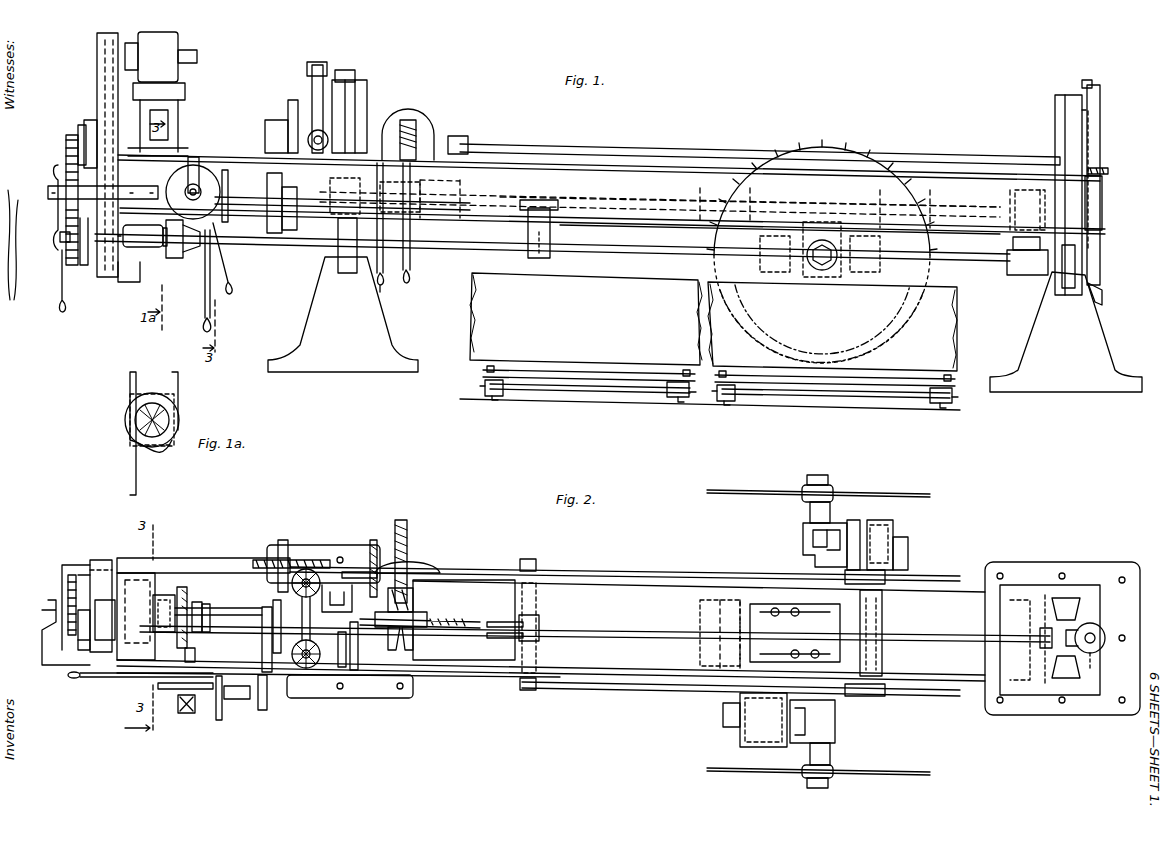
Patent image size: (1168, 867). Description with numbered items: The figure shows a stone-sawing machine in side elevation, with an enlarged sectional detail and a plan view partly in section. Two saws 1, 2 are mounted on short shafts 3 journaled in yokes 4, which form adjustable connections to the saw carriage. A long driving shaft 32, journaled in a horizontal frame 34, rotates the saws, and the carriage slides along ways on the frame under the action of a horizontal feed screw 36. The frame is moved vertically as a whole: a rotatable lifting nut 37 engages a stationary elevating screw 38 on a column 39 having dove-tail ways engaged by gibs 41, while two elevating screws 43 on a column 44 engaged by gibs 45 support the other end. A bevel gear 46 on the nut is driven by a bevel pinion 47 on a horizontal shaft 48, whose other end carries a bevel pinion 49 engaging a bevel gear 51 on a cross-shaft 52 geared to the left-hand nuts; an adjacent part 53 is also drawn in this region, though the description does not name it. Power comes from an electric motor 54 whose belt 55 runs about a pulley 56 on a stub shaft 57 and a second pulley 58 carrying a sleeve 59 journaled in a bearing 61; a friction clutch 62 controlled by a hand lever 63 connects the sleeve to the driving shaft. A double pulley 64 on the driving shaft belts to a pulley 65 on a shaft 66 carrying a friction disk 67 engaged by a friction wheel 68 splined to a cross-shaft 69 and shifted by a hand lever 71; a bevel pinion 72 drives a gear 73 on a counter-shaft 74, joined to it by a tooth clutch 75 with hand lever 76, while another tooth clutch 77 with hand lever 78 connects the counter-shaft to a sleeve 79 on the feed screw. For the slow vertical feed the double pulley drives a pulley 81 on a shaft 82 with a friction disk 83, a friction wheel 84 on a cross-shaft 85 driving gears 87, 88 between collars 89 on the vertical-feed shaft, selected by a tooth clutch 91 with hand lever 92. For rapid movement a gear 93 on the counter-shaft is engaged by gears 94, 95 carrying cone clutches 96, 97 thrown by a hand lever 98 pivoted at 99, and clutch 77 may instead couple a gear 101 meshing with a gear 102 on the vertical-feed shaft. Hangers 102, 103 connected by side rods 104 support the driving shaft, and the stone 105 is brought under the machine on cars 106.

In FIG. 1, the saw 1 is at (852, 178).
In FIG. 2, the saw 1 is at (880, 768).
In FIG. 2, the saw 2 is at (900, 492).
In FIG. 2, the short shaft 3 is at (813, 538).
In FIG. 2, the yoke 4 is at (810, 510).
In FIG. 1, the driving shaft 32 is at (60, 240).
In FIG. 1A, the driving shaft 32 is at (134, 446).
In FIG. 2, the driving shaft 32 is at (590, 626).
In FIG. 1, the horizontal frame 34 is at (650, 178).
In FIG. 2, the horizontal frame 34 is at (660, 585).
In FIG. 1, the horizontal feed screw 36 is at (540, 196).
In FIG. 2, the horizontal feed screw 36 is at (714, 616).
In FIG. 1, the rotatable lifting nut 37 is at (1104, 203).
In FIG. 1, the stationary elevating screw 38 is at (1098, 272).
In FIG. 2, the stationary elevating screw 38 is at (1098, 630).
In FIG. 1, the column 39 is at (1085, 118).
In FIG. 2, the column 39 is at (1082, 598).
In FIG. 2, the dove-tail gib 41 is at (1066, 598).
In FIG. 2, the stationary elevating screw 43 is at (307, 569).
In FIG. 2, the column 44 is at (342, 668).
In FIG. 2, the gib 45 is at (355, 672).
In FIG. 1, the bevel gear 46 is at (1108, 171).
In FIG. 2, the bevel gear 46 is at (1103, 645).
In FIG. 1, the bevel pinion 47 is at (1090, 150).
In FIG. 2, the bevel pinion 47 is at (1092, 660).
In FIG. 1, the horizontal shaft 48 is at (535, 147).
In FIG. 2, the horizontal shaft 48 is at (486, 624).
In FIG. 1, the bevel pinion 49 is at (312, 120).
In FIG. 2, the bevel pinion 49 is at (340, 640).
In FIG. 2, the bevel gear 51 is at (277, 600).
In FIG. 2, the cross-shaft 52 is at (300, 620).
In FIG. 2, the housing 53 is at (330, 585).
In FIG. 1, the electric motor 54 is at (165, 35).
In FIG. 1, the belt 55 is at (97, 78).
In FIG. 1, the pulley 56 is at (92, 118).
In FIG. 2, the pulley 56 is at (100, 560).
In FIG. 1, the stub shaft 57 is at (178, 150).
In FIG. 1, the pulley 58 is at (124, 284).
In FIG. 2, the pulley 58 is at (100, 660).
In FIG. 1, the sleeve 59 is at (145, 248).
In FIG. 1A, the sleeve 59 is at (128, 428).
In FIG. 1, the bearing 61 is at (166, 248).
In FIG. 1A, the bearing 61 is at (168, 412).
In FIG. 1, the friction clutch 62 is at (180, 258).
In FIG. 1A, the friction clutch 62 is at (172, 396).
In FIG. 1, the hand lever 63 is at (204, 318).
In FIG. 1A, the hand lever 63 is at (172, 380).
In FIG. 1, the double pulley 64 is at (285, 232).
In FIG. 2, the double pulley 64 is at (262, 632).
In FIG. 1, the pulley 65 is at (268, 173).
In FIG. 2, the pulley 65 is at (267, 708).
In FIG. 1, the shaft 66 is at (260, 206).
In FIG. 2, the shaft 66 is at (245, 699).
In FIG. 1, the friction disk 67 is at (224, 168).
In FIG. 2, the friction disk 67 is at (220, 720).
In FIG. 1, the friction wheel 68 is at (200, 160).
In FIG. 2, the friction wheel 68 is at (206, 690).
In FIG. 2, the cross-shaft 69 is at (184, 714).
In FIG. 2, the hand lever 71 is at (116, 680).
In FIG. 2, the bevel pinion 72 is at (196, 648).
In FIG. 2, the gear 73 is at (183, 587).
In FIG. 1, the counter-shaft 74 is at (340, 190).
In FIG. 2, the counter-shaft 74 is at (222, 608).
In FIG. 2, the tooth clutch 75 is at (198, 602).
In FIG. 1, the hand lever 76 is at (234, 296).
In FIG. 2, the hand lever 76 is at (208, 604).
In FIG. 1, the tooth clutch 77 is at (386, 215).
In FIG. 1, the hand lever 78 is at (384, 284).
In FIG. 1, the sleeve 79 is at (440, 188).
In FIG. 1, the pulley 81 is at (286, 110).
In FIG. 2, the pulley 81 is at (280, 540).
In FIG. 2, the shaft 82 is at (373, 548).
In FIG. 2, the friction disk 83 is at (394, 530).
In FIG. 2, the friction wheel 84 is at (430, 563).
In FIG. 2, the cross-shaft 85 is at (414, 600).
In FIG. 2, the gear 87 is at (395, 640).
In FIG. 2, the gear 88 is at (400, 645).
In FIG. 2, the collar 89 is at (414, 640).
In FIG. 2, the tooth clutch 91 is at (427, 618).
In FIG. 1, the hand lever 92 is at (410, 282).
In FIG. 1, the gear 93 is at (66, 210).
In FIG. 2, the gear 93 is at (62, 645).
In FIG. 1, the gear 94 is at (80, 127).
In FIG. 2, the gear 94 is at (66, 568).
In FIG. 1, the gear 95 is at (76, 300).
In FIG. 1, the cone clutch 96 is at (68, 140).
In FIG. 2, the cone clutch 96 is at (74, 575).
In FIG. 1, the cone clutch 97 is at (90, 266).
In FIG. 2, the cone clutch 97 is at (82, 650).
In FIG. 1, the hand lever 98 is at (60, 236).
In FIG. 1, the pivot 99 is at (52, 200).
In FIG. 1, the gear 101 is at (358, 282).
In FIG. 1, the gear / hanger 102 is at (365, 100).
In FIG. 2, the gear / hanger 102 is at (538, 610).
In FIG. 1, the hanger 103 is at (903, 268).
In FIG. 2, the hanger 103 is at (895, 612).
In FIG. 1, the side rod 104 is at (640, 222).
In FIG. 2, the side rod 104 is at (590, 567).
In FIG. 1, the stone 105 is at (713, 322).
In FIG. 1, the car 106 is at (583, 380).